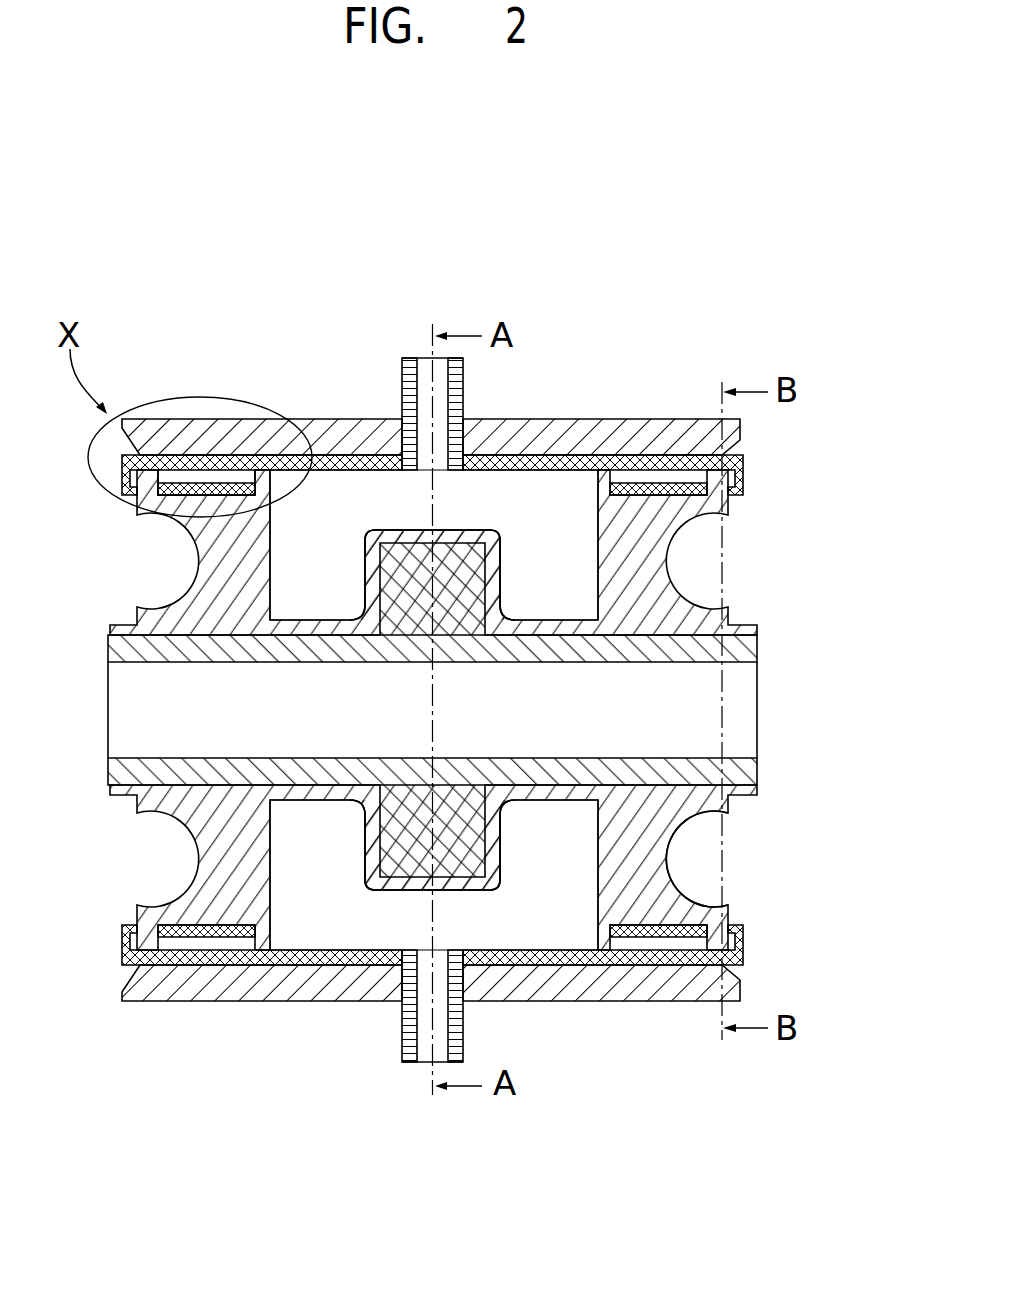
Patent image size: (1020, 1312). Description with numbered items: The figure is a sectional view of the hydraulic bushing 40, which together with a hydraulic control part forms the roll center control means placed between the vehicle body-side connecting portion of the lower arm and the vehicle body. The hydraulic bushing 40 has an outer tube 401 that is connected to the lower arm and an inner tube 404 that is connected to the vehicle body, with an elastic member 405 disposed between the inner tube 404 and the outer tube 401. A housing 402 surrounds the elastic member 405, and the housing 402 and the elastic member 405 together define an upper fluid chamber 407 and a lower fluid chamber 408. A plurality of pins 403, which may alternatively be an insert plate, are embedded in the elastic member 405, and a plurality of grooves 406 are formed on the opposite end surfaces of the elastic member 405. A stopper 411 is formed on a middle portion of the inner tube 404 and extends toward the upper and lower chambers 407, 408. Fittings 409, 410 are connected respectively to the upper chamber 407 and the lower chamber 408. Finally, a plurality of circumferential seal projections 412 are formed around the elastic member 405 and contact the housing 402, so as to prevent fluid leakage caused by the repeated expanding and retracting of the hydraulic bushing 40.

The hydraulic bushing 40 is at (645, 311).
The outer tube 401 is at (673, 440).
The housing 402 is at (744, 464).
The pins 403 is at (706, 491).
The inner tube 404 is at (748, 650).
The elastic member 405 is at (688, 617).
The grooves 406 is at (703, 856).
The upper fluid chamber 407 is at (533, 512).
The lower fluid chamber 408 is at (530, 926).
The fitting 409 is at (408, 362).
The fitting 410 is at (460, 1033).
The stopper 411 is at (507, 557).
The circumferential seal projections 412 is at (190, 481).